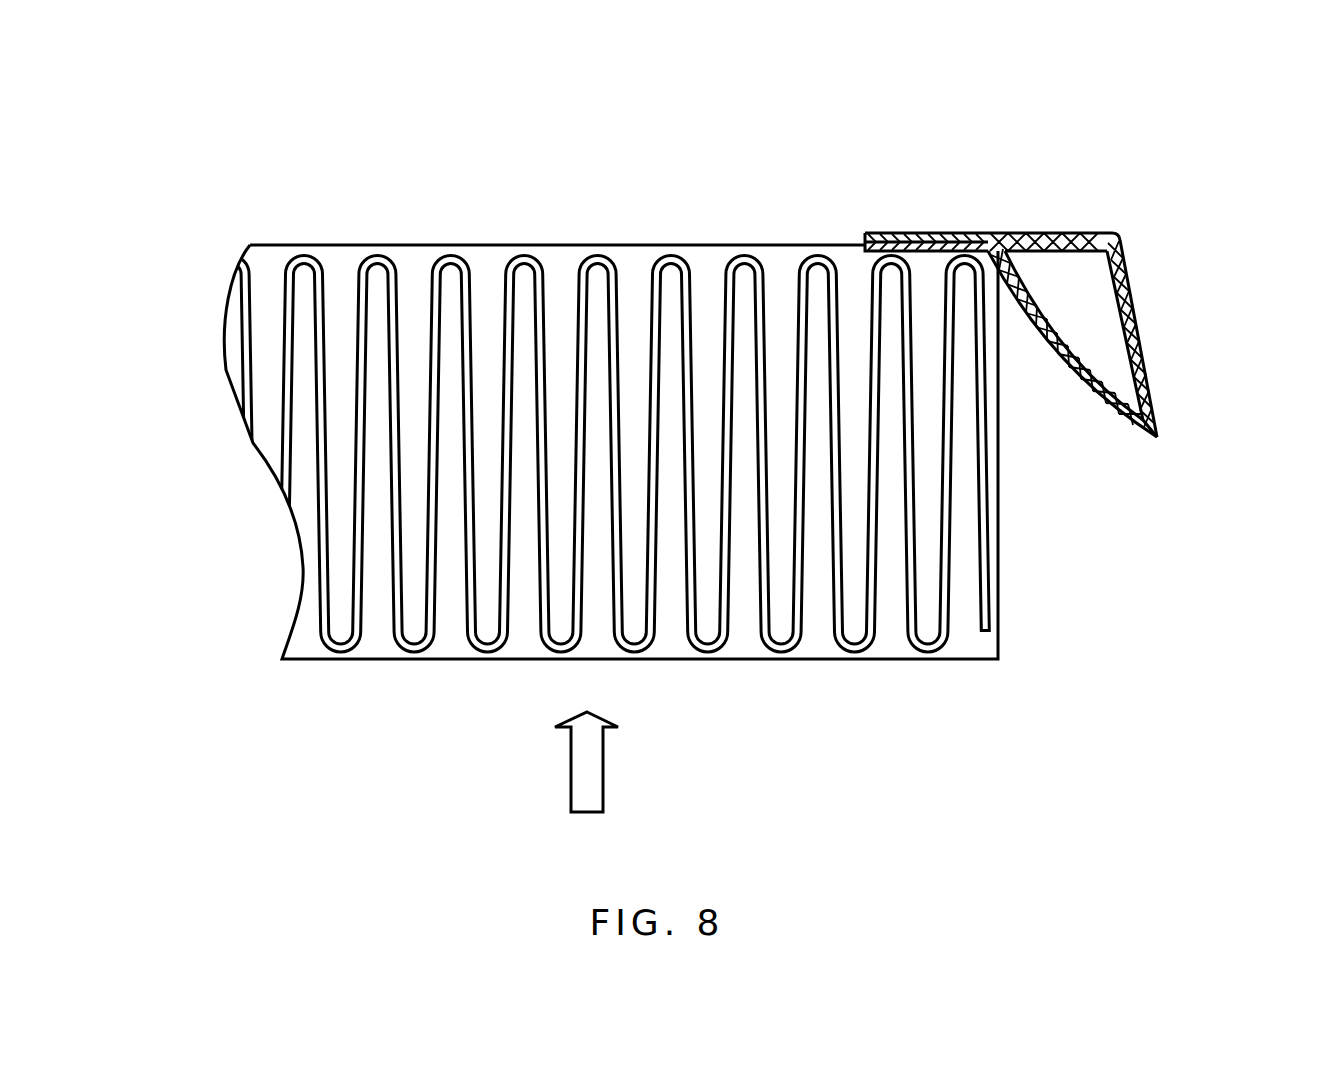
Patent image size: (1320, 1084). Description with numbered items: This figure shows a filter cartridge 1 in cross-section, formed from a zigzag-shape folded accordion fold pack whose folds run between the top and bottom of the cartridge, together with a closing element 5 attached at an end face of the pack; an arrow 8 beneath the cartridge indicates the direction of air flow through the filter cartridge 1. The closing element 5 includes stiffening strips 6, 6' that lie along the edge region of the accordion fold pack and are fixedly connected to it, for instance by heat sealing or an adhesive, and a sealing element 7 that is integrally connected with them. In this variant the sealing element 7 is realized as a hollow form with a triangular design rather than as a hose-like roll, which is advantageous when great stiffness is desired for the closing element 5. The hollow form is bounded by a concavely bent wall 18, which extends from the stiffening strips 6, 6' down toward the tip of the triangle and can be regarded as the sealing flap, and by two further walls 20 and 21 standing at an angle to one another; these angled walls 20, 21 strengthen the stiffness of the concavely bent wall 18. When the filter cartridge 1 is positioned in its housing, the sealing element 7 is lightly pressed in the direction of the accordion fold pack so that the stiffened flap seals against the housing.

The filter cartridge 1 is at (451, 228).
The closing element 5 is at (855, 198).
The stiffening strip 6 is at (896, 172).
The stiffening strip 6' is at (956, 171).
The wall 20 is at (1053, 233).
The sealing element 7 is at (1088, 233).
The wall 21 is at (1142, 363).
The concavely bent wall 18 is at (1083, 387).
The arrow 8 is at (588, 788).